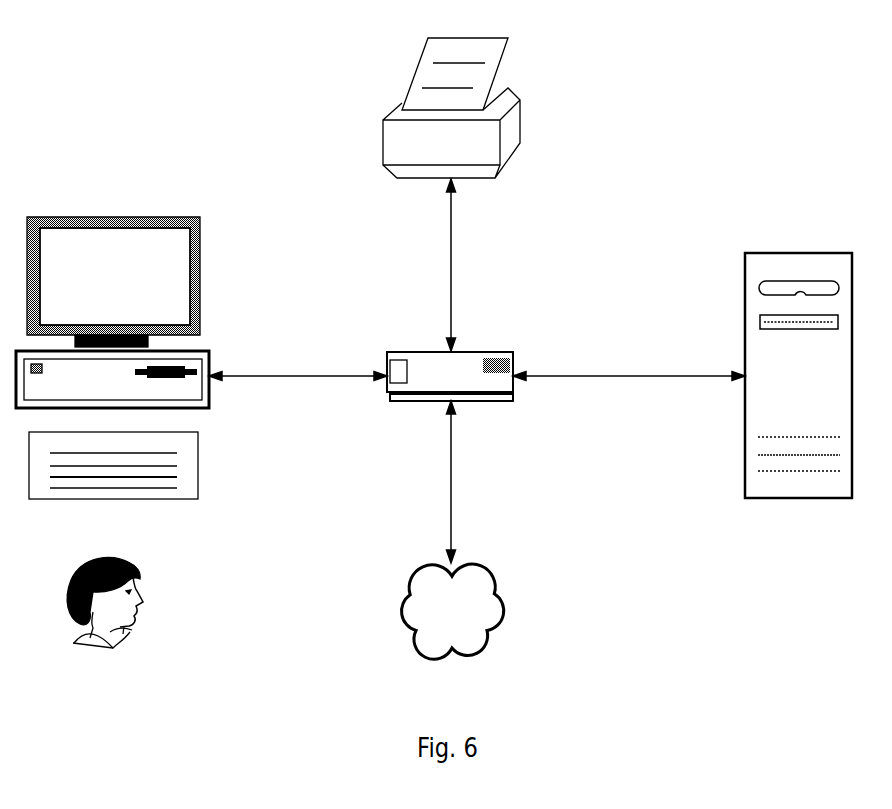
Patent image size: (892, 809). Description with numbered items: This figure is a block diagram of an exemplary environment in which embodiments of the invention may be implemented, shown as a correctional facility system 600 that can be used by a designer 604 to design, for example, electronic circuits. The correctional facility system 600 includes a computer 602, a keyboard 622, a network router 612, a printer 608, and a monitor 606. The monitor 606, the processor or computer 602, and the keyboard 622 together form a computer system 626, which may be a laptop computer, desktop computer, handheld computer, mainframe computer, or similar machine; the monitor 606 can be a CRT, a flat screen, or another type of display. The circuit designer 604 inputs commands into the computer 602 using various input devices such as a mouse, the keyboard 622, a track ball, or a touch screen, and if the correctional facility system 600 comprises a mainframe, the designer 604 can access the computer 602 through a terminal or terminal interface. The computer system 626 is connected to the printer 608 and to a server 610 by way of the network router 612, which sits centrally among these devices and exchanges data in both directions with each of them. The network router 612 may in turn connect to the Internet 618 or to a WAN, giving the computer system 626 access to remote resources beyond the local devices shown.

The correctional facility system 600 is at (727, 115).
The computer 602 is at (209, 352).
The designer 604 is at (130, 563).
The monitor 606 is at (147, 258).
The printer 608 is at (382, 152).
The server 610 is at (745, 481).
The network router 612 is at (478, 352).
The Internet 618 is at (482, 564).
The keyboard 622 is at (198, 458).
The computer system 626 is at (203, 273).